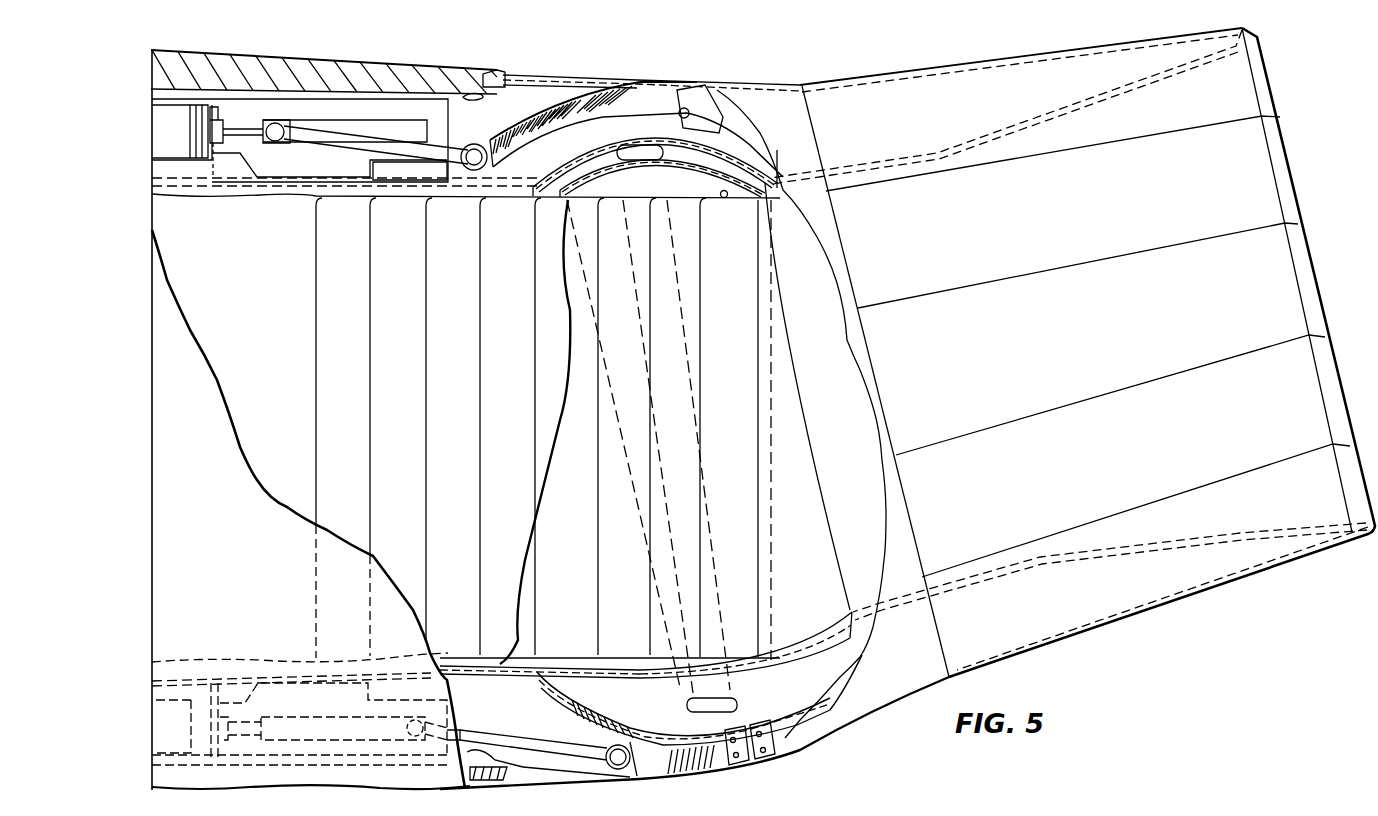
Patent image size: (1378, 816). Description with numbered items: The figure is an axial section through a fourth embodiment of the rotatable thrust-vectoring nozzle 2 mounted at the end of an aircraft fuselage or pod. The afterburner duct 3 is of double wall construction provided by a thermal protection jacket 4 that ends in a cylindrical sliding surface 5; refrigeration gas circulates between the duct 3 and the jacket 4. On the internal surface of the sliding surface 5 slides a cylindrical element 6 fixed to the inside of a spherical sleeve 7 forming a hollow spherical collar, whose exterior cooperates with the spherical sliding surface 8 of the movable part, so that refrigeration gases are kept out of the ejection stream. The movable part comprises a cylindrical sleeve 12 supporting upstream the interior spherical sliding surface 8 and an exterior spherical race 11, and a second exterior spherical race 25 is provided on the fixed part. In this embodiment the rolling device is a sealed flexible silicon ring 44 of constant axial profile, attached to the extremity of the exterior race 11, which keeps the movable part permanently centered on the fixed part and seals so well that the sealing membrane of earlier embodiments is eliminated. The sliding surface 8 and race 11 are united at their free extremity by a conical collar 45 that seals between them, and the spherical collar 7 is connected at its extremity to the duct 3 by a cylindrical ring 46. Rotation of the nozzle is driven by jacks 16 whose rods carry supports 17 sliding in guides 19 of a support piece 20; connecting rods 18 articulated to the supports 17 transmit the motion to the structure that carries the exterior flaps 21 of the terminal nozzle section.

The rotatable thrust-vectoring nozzle 2 is at (800, 68).
The afterburner duct 3 is at (228, 182).
The thermal protection jacket 4 is at (262, 272).
The cylindrical sliding surface 5 is at (724, 199).
The cylindrical element 6 is at (712, 645).
The spherical sleeve 7 is at (660, 652).
The spherical sliding surface 8 is at (806, 645).
The exterior spherical race 11 is at (817, 668).
The cylindrical sleeve 12 is at (874, 601).
The jacks 16 is at (174, 150).
The supports 17 is at (275, 122).
The connecting rods 18 is at (357, 147).
The guides 19 is at (330, 118).
The support piece 20 is at (355, 105).
The exterior flaps 21 is at (972, 58).
The second exterior spherical race 25 is at (562, 703).
The flexible silicon ring 44 is at (648, 147).
The conical collar 45 is at (686, 691).
The cylindrical ring 46 is at (567, 665).